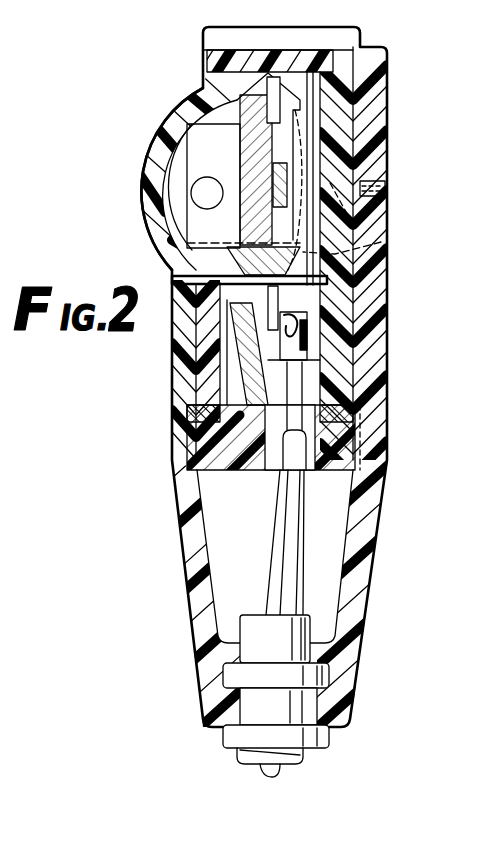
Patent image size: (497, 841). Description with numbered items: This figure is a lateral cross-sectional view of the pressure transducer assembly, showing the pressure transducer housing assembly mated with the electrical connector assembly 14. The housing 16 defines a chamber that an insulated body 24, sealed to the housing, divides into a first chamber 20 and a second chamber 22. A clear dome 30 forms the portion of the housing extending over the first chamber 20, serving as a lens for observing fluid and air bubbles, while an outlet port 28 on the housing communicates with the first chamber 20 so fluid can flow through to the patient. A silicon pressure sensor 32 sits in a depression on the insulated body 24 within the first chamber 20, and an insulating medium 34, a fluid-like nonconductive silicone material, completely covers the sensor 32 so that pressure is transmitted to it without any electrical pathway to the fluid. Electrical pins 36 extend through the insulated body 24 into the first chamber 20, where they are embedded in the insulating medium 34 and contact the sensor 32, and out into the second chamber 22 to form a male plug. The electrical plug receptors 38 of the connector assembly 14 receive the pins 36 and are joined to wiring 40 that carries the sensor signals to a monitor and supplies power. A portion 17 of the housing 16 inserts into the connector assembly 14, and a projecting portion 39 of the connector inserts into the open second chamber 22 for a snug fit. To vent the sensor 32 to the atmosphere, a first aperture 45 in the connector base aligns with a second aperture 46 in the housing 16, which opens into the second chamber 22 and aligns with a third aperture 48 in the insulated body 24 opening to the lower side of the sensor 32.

The electrical connector assembly 14 is at (181, 575).
The housing 16 is at (326, 27).
The portion of the housing 17 is at (243, 358).
The first chamber 20 is at (201, 141).
The second chamber 22 is at (317, 288).
The insulated body 24 is at (352, 97).
The outlet port 28 is at (208, 193).
The dome 30 is at (142, 165).
The silicon pressure sensor 32 is at (288, 170).
The insulating medium 34 is at (236, 108).
The electrical pins 36 is at (232, 293).
The electrical plug receptors 38 is at (300, 357).
The projecting portion 39 is at (200, 357).
The wiring 40 is at (293, 548).
The first aperture 45 is at (384, 190).
The second aperture 46 is at (370, 231).
The third aperture 48 is at (381, 242).